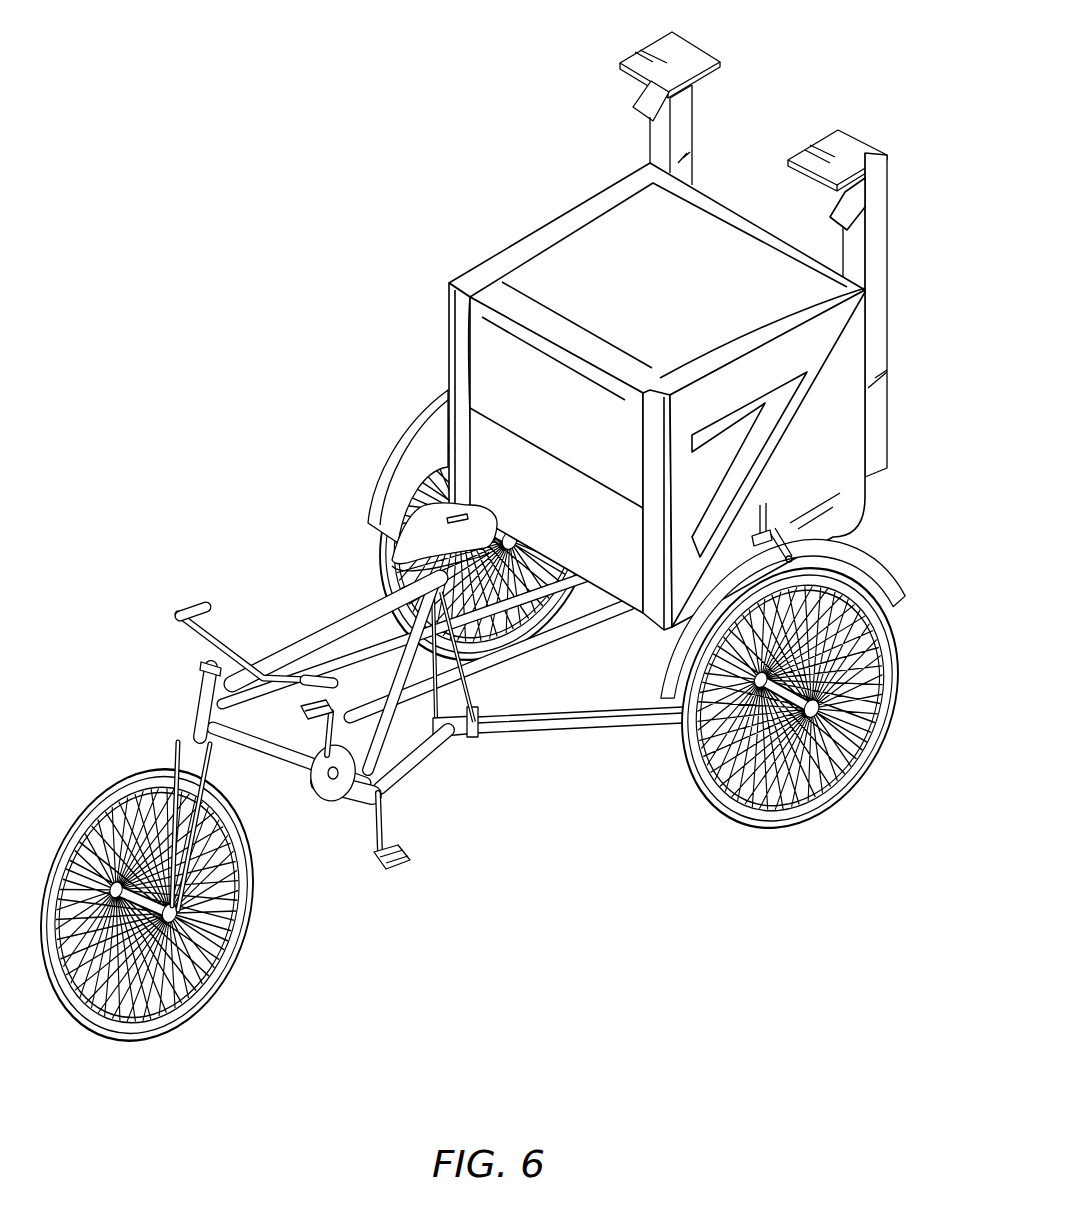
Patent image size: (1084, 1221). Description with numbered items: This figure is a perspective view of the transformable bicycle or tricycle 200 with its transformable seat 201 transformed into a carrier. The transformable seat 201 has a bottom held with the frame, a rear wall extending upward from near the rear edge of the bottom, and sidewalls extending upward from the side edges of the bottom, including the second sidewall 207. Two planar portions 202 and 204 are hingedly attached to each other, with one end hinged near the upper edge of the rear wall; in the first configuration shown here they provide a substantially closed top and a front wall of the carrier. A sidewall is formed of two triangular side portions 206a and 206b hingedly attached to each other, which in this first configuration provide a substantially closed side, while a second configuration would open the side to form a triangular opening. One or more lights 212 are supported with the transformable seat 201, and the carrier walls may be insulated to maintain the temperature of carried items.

The transformable bicycle or tricycle 200 is at (484, 549).
The transformable seat 201 is at (636, 372).
The planar portion 202 is at (497, 375).
The planar portion 204 is at (695, 233).
The side portion 206a is at (838, 463).
The side portion 206b is at (765, 368).
The second sidewall 207 is at (785, 395).
The lights 212 is at (853, 213).